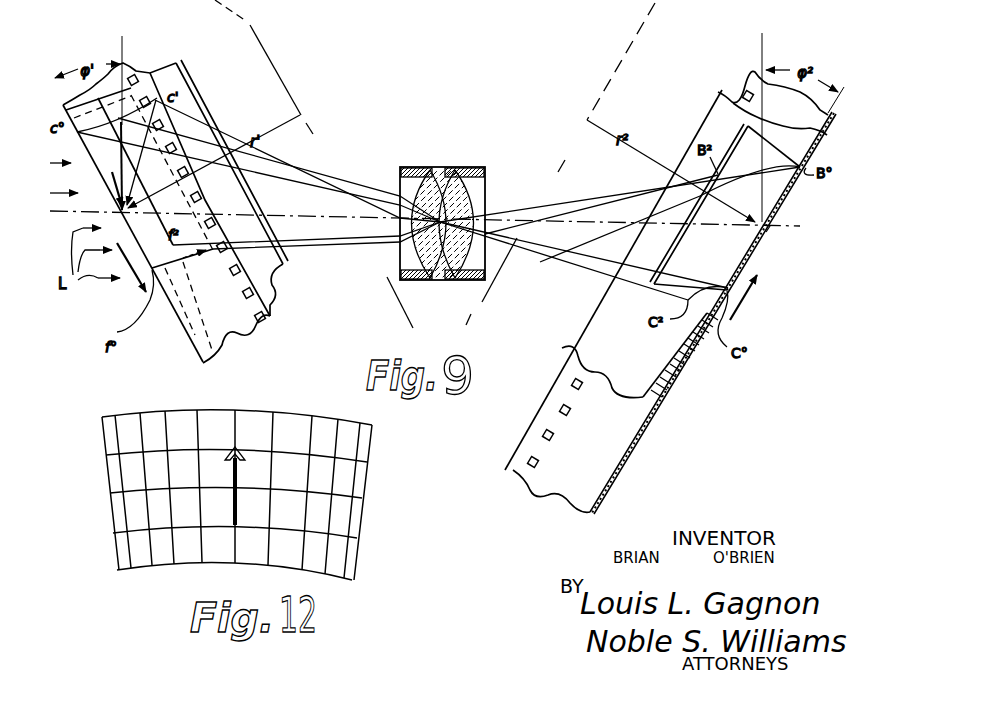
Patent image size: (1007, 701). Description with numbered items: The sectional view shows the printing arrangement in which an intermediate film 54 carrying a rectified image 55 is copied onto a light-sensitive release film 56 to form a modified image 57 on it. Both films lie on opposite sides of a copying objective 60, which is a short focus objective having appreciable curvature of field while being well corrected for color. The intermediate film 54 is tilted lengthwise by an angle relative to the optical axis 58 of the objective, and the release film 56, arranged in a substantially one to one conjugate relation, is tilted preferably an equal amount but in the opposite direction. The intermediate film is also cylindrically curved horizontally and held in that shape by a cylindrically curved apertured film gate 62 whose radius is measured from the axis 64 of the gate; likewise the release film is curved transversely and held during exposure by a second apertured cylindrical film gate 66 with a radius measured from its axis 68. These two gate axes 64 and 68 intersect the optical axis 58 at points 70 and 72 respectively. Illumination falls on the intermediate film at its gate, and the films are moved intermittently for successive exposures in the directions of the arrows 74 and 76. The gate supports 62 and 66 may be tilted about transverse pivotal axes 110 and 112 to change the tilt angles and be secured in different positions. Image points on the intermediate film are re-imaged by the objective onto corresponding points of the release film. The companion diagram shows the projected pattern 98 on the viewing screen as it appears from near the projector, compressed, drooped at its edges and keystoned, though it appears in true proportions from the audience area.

In FIG. 9, the intermediate film 54 is at (200, 317).
In FIG. 9, the rectified image 55 is at (103, 175).
In FIG. 9, the release film 56 is at (626, 442).
In FIG. 9, the image on release film 57 is at (764, 196).
In FIG. 9, the optical axis 58 is at (284, 221).
In FIG. 9, the copying objective 60 is at (440, 168).
In FIG. 9, the cylindrically curved apertured film gate 62 is at (176, 66).
In FIG. 9, the axis of the cylindrical film gate 64 is at (375, 254).
In FIG. 9, the second apertured cylindrically shaped film gate 66 is at (580, 348).
In FIG. 9, the axis of the cylindrical gate 68 is at (487, 292).
In FIG. 9, the intersection point 70 is at (363, 222).
In FIG. 9, the intersection point 72 is at (525, 222).
In FIG. 9, the arrow indicating direction of movement 74 is at (132, 282).
In FIG. 9, the arrow indicating direction of movement 76 is at (750, 294).
In FIG. 12, the projected pattern on viewing screen 98 is at (340, 481).
In FIG. 9, the transverse pivotal axis 110 is at (118, 197).
In FIG. 9, the transverse pivotal axis 112 is at (766, 240).